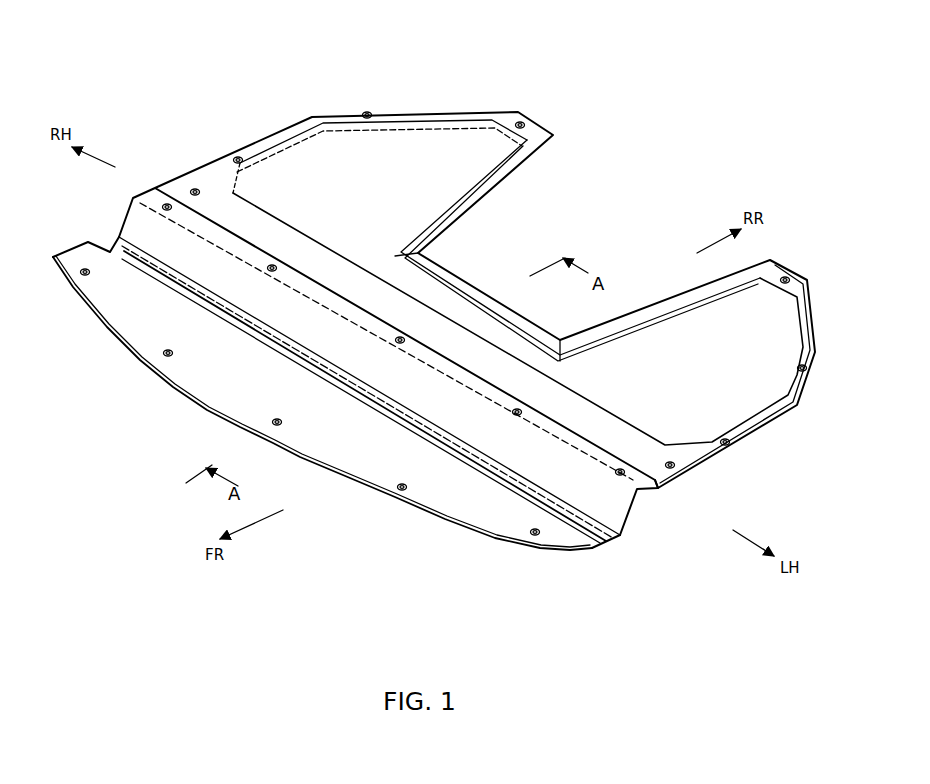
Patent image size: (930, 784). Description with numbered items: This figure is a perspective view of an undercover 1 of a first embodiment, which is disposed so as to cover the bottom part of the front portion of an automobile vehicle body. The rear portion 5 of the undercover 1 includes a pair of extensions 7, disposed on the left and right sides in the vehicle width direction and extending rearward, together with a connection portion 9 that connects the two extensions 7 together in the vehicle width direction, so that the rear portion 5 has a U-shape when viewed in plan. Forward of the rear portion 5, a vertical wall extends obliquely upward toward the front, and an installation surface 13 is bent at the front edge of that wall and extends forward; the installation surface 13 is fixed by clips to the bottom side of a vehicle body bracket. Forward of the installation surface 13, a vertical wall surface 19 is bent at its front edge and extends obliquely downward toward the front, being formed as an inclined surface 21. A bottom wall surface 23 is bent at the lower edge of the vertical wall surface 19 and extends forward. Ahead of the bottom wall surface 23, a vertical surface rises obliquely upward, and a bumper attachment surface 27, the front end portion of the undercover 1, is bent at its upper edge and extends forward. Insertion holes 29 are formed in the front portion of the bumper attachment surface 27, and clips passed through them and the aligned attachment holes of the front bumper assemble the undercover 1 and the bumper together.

The undercover 1 is at (410, 64).
The rear portion 5 is at (258, 140).
The extensions 7 is at (460, 143).
The connection portion 9 is at (437, 297).
The installation surface 13 is at (643, 495).
The vertical wall surface 19 is at (639, 507).
The inclined surface 21 is at (628, 522).
The bottom wall surface 23 is at (600, 537).
The bumper attachment surface 27 is at (482, 505).
The insertion holes 29 is at (405, 492).